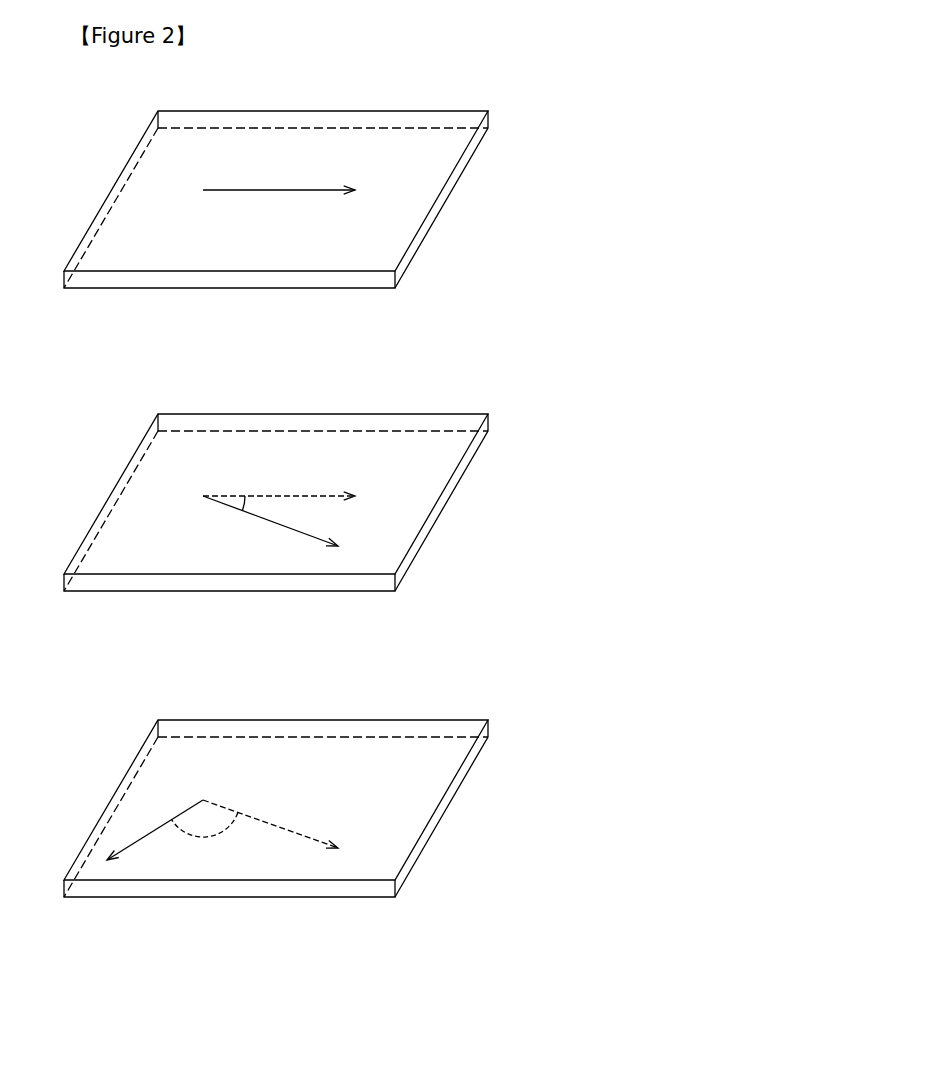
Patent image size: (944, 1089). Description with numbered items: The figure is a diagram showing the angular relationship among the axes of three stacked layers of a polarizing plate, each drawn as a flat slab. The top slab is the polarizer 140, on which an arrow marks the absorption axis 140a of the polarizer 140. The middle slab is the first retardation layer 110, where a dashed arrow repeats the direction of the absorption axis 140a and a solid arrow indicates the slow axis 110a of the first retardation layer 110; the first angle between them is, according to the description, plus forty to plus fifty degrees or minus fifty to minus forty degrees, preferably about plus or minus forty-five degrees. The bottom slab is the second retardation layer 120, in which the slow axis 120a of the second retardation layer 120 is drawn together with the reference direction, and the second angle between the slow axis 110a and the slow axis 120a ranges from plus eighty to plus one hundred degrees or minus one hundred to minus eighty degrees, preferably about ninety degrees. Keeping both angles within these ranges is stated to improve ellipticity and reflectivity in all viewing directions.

The first retardation layer 110 is at (453, 485).
The slow axis of the first retardation layer 110a is at (268, 520).
The second retardation layer 120 is at (453, 788).
The slow axis of the second retardation layer 120a is at (147, 836).
The polarizer 140 is at (453, 178).
The absorption axis of the polarizer 140a is at (262, 190).